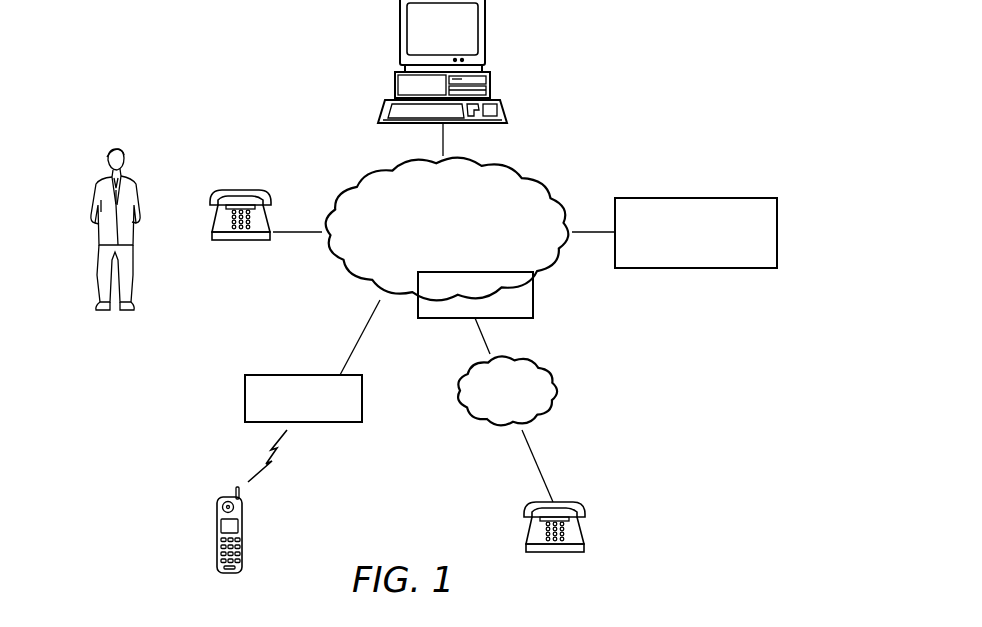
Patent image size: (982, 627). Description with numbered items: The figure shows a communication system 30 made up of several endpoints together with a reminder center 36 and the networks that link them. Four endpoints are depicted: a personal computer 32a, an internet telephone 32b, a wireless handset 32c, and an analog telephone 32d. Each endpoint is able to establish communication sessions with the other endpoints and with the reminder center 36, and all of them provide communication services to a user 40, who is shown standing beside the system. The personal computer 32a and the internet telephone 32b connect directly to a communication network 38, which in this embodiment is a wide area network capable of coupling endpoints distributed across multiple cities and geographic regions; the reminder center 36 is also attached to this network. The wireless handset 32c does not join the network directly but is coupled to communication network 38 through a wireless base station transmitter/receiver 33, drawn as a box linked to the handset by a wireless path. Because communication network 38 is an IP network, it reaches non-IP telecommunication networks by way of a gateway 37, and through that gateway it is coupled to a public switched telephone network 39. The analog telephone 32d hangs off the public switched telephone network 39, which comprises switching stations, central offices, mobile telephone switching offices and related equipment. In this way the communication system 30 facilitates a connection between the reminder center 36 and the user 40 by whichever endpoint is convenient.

The communication system 30 is at (286, 68).
The personal computer endpoint 32a is at (400, 30).
The internet telephone endpoint 32b is at (228, 192).
The wireless handset endpoint 32c is at (217, 543).
The analog telephone endpoint 32d is at (583, 541).
The wireless base station transmitter/receiver 33 is at (245, 398).
The reminder center 36 is at (777, 228).
The gateway 37 is at (533, 305).
The communication network 38 is at (362, 176).
The public switched telephone network 39 is at (474, 428).
The user 40 is at (93, 196).